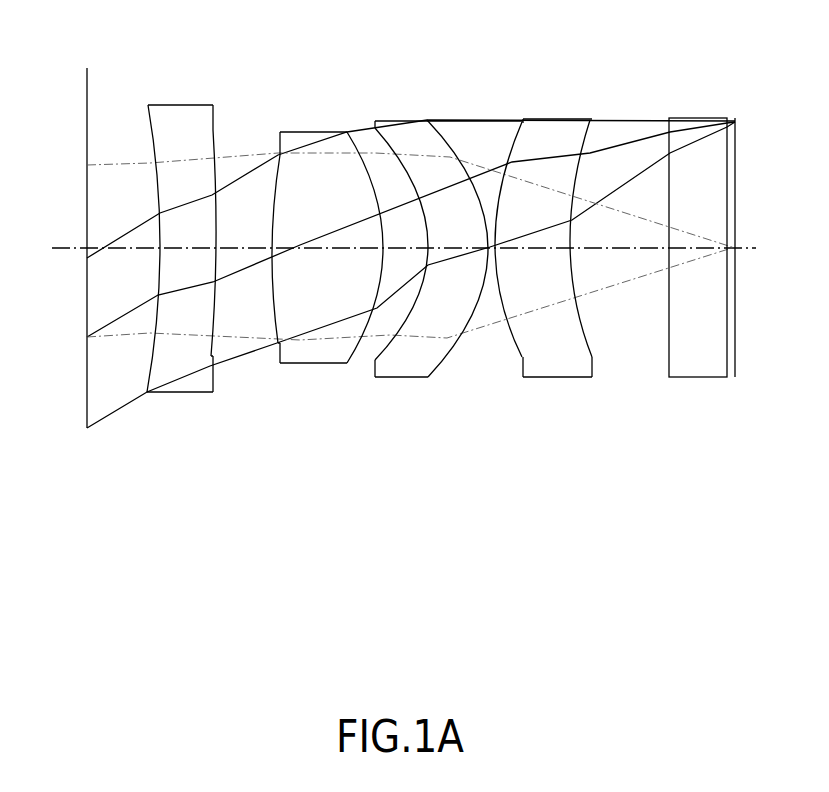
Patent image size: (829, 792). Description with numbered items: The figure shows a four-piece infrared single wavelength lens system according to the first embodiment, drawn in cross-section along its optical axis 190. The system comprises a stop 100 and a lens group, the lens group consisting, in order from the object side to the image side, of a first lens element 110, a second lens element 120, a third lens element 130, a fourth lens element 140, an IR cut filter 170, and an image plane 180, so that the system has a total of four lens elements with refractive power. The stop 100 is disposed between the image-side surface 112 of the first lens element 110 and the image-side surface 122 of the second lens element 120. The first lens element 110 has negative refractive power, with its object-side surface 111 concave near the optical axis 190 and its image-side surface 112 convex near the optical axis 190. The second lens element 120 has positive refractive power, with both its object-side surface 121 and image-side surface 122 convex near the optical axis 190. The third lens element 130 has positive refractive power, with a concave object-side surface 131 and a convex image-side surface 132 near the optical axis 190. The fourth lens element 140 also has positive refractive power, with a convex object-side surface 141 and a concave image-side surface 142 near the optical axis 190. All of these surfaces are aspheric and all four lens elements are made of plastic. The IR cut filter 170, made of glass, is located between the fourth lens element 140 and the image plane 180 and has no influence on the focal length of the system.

The stop 100 is at (278, 151).
The first lens element 110 is at (172, 260).
The object-side surface of first lens element 111 is at (147, 392).
The image-side surface of first lens element 112 is at (210, 356).
The second lens element 120 is at (311, 272).
The object-side surface of second lens element 121 is at (274, 318).
The image-side surface of second lens element 122 is at (357, 348).
The third lens element 130 is at (434, 266).
The object-side surface of third lens element 131 is at (372, 356).
The image-side surface of third lens element 132 is at (452, 338).
The fourth lens element 140 is at (542, 266).
The object-side surface of fourth lens element 141 is at (516, 345).
The image-side surface of fourth lens element 142 is at (588, 345).
The IR cut filter 170 is at (705, 108).
The image plane 180 is at (735, 347).
The optical axis 190 is at (65, 245).